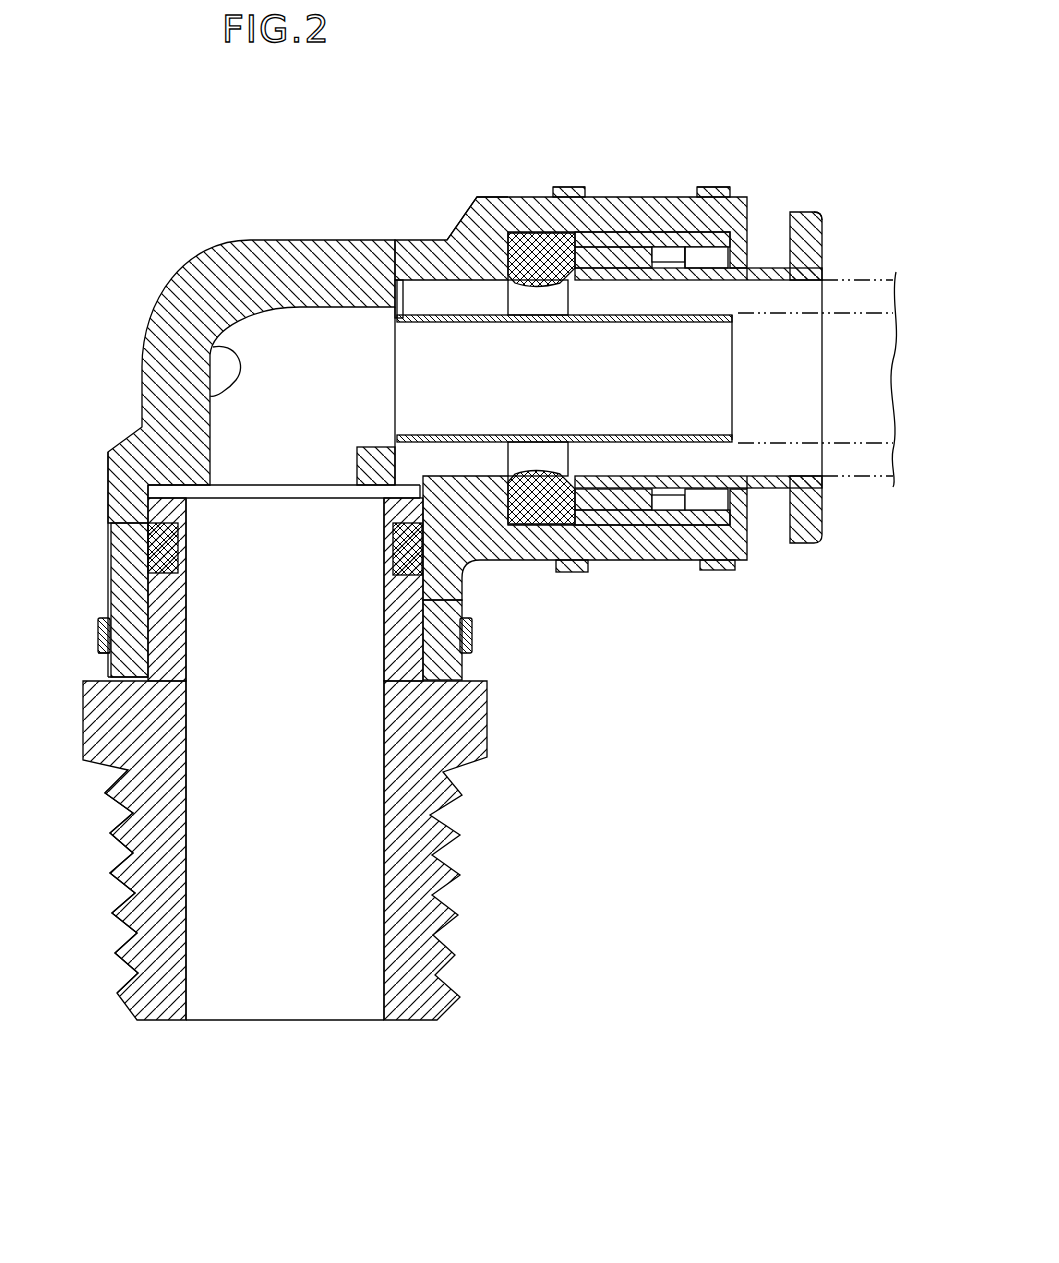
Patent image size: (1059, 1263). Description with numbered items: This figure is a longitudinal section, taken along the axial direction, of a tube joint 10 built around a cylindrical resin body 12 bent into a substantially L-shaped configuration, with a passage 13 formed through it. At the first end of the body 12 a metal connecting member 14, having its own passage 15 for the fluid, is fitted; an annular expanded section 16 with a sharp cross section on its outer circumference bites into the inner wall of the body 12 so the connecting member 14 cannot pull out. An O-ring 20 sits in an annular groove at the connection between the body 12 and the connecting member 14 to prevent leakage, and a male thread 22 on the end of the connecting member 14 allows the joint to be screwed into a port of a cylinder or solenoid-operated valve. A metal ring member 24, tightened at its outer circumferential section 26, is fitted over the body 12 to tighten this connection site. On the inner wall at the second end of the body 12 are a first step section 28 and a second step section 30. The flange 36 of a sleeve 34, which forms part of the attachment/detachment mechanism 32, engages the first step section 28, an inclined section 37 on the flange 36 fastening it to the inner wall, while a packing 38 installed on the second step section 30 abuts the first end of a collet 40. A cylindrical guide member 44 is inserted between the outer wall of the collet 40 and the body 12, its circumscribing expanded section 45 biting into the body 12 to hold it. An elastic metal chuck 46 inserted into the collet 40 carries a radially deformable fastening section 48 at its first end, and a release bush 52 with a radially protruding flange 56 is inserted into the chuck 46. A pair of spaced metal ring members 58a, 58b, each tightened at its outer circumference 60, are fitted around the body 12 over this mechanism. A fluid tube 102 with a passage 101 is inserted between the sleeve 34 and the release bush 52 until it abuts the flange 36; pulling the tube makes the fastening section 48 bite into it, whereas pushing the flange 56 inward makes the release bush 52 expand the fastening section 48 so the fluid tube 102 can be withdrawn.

The tube joint 10 is at (798, 107).
The body 12 is at (214, 240).
The passage 13 is at (213, 347).
The connecting member 14 is at (105, 757).
The passage 15 is at (190, 975).
The annular expanded section 16 is at (110, 563).
The O-ring 20 is at (108, 512).
The male thread 22 is at (118, 918).
The ring member 24 is at (98, 647).
The outer circumferential section 26 is at (99, 618).
The first step section 28 is at (350, 283).
The second step section 30 is at (490, 197).
The attachment/detachment mechanism 32 is at (804, 210).
The sleeve 34 is at (455, 316).
The flange 36 is at (408, 272).
The inclined section 37 is at (388, 288).
The packing 38 is at (530, 240).
The collet 40 is at (619, 248).
The guide member 44 is at (650, 240).
The circumscribing expanded section 45 is at (690, 252).
The chuck 46 is at (645, 250).
The fastening section 48 is at (600, 242).
The release bush 52 is at (763, 268).
The flange 56 is at (810, 252).
The ring member 58a is at (556, 187).
The ring member 58b is at (710, 187).
The outer circumference 60 is at (566, 187).
The passage 101 is at (842, 432).
The fluid tube 102 is at (878, 290).